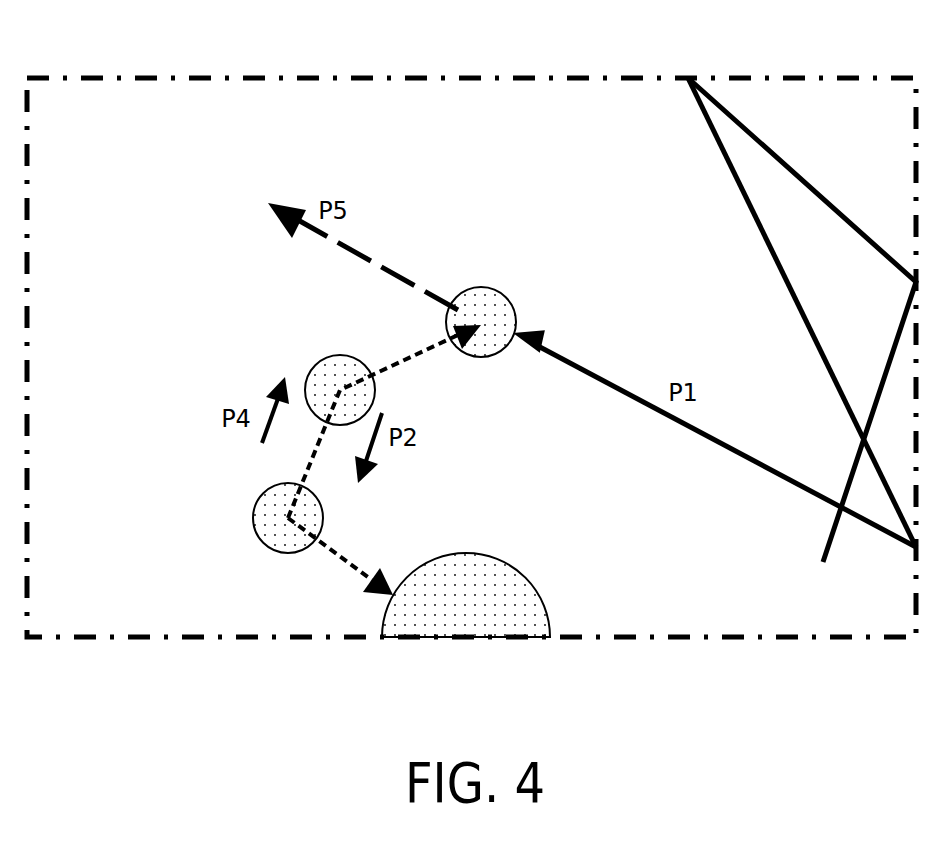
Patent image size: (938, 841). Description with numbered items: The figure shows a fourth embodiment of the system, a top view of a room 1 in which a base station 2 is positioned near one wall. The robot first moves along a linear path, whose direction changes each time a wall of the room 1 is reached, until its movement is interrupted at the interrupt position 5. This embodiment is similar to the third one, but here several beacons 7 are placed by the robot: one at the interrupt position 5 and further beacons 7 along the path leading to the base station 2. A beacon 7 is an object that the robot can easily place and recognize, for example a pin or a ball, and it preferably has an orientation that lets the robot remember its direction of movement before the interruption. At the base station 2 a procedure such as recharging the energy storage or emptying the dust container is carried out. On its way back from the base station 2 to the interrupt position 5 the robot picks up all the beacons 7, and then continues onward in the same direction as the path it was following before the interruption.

The room 1 is at (98, 86).
The base station 2 is at (507, 627).
The interrupt position 5 is at (511, 327).
The beacon 7 is at (469, 300).